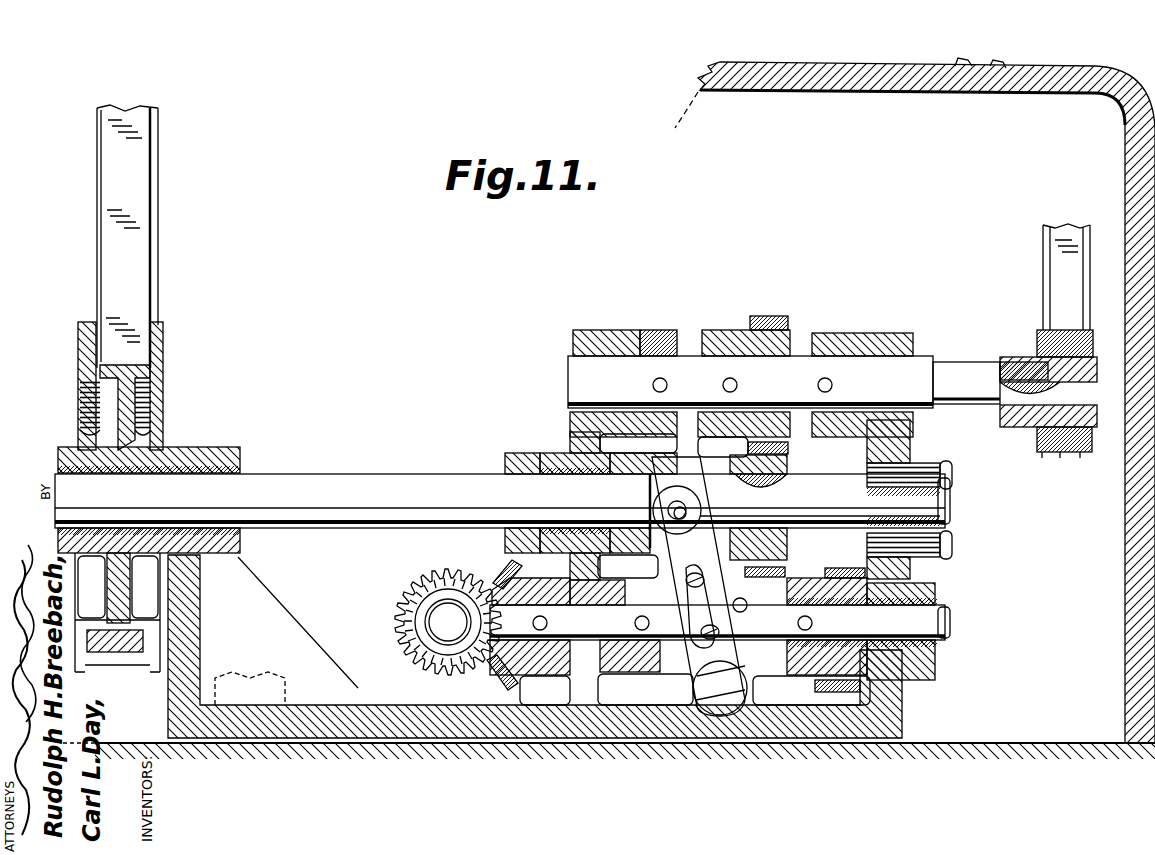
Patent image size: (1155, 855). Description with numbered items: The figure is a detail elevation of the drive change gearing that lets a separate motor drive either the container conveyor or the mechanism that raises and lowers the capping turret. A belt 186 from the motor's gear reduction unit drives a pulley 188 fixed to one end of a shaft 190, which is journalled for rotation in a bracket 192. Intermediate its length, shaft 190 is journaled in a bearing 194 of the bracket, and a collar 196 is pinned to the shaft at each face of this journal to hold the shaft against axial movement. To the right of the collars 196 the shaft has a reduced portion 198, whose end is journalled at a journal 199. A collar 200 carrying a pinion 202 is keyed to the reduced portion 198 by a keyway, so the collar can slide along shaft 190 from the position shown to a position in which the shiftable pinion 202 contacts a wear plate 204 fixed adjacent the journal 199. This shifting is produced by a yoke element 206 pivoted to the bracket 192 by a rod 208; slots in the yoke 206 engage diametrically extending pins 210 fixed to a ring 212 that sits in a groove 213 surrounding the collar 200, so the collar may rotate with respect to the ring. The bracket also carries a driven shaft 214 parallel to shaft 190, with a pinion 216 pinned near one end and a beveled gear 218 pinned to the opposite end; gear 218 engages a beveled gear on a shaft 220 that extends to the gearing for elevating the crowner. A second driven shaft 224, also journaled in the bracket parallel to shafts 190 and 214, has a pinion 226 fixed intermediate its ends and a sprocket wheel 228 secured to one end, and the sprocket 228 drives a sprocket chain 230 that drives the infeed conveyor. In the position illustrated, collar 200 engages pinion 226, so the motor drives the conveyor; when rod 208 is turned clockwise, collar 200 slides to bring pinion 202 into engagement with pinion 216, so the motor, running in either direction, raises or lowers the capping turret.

The belt 186 is at (157, 236).
The pulley 188 is at (160, 364).
The shaft 190 is at (362, 485).
The bracket 192 is at (279, 620).
The bearing 194 is at (548, 462).
The collar 196 is at (512, 455).
The reduced portion 198 is at (818, 502).
The journal 199 is at (950, 493).
The collar 200 is at (775, 541).
The pinion 202 is at (820, 580).
The wear plate 204 is at (866, 472).
The yoke element 206 is at (678, 496).
The rod 208 is at (720, 690).
The pins 210 is at (695, 478).
The ring 212 is at (660, 560).
The groove 213 is at (646, 487).
The driven shaft 214 is at (720, 655).
The pinion 216 is at (845, 641).
The beveled gear 218 is at (514, 678).
The shaft 220 is at (440, 622).
The second driven shaft 224 is at (686, 365).
The pinion 226 is at (796, 335).
The sprocket wheel 228 is at (1035, 352).
The sprocket chain 230 is at (1045, 268).